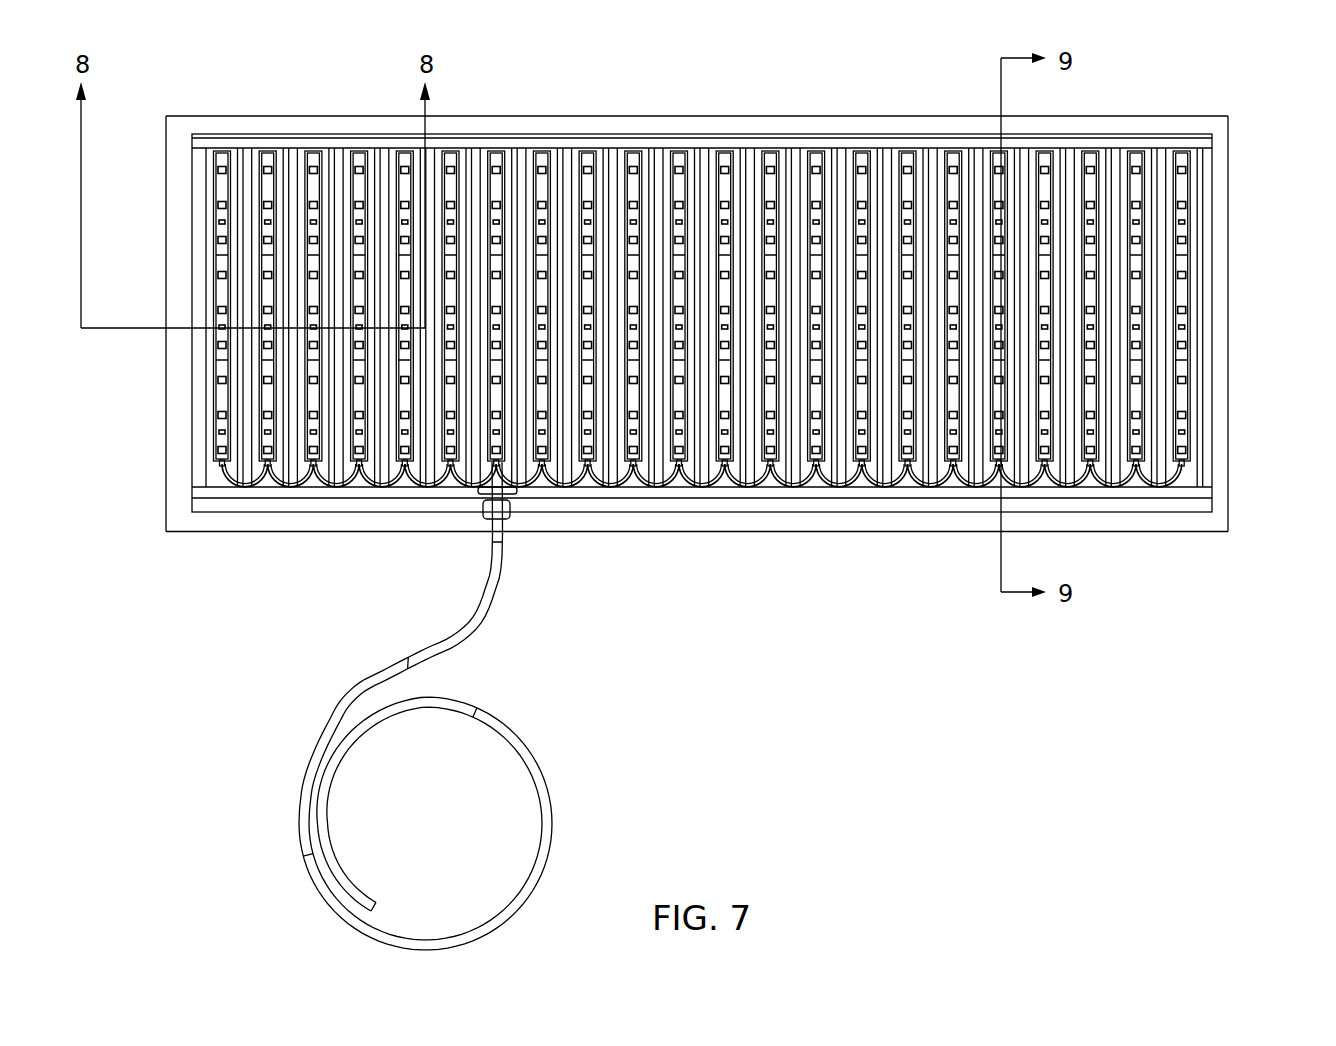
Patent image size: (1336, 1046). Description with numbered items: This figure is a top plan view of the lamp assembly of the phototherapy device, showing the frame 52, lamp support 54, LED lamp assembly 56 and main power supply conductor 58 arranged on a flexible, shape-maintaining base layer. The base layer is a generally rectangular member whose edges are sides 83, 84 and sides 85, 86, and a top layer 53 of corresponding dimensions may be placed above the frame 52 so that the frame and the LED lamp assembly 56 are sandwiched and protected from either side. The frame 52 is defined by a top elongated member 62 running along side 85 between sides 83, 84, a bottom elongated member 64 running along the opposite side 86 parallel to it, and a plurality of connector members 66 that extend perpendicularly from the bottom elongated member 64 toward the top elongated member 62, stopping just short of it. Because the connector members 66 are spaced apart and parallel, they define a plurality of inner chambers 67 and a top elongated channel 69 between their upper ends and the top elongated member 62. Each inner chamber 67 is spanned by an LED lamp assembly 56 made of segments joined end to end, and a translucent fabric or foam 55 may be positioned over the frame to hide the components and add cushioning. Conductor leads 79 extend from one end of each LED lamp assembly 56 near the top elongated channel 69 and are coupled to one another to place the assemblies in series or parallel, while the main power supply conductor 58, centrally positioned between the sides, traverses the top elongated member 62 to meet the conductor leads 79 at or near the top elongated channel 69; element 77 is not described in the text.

The frame 52 is at (1258, 447).
The top layer 53 is at (1228, 130).
The lamp support 54 is at (902, 472).
The translucent fabric or foam 55 is at (1160, 160).
The LED lamp assembly 56 is at (950, 455).
The main power supply conductor 58 is at (552, 826).
The top elongated member 62 is at (220, 524).
The bottom elongated member 64 is at (358, 136).
The connector members 66 is at (236, 210).
The inner chambers 67 is at (205, 465).
The top elongated channel 69 is at (205, 489).
The wire loop 77 is at (817, 470).
The conductor leads 79 is at (703, 490).
The side 83 is at (627, 108).
The side 84 is at (290, 543).
The side 85 is at (152, 371).
The side 86 is at (1228, 308).